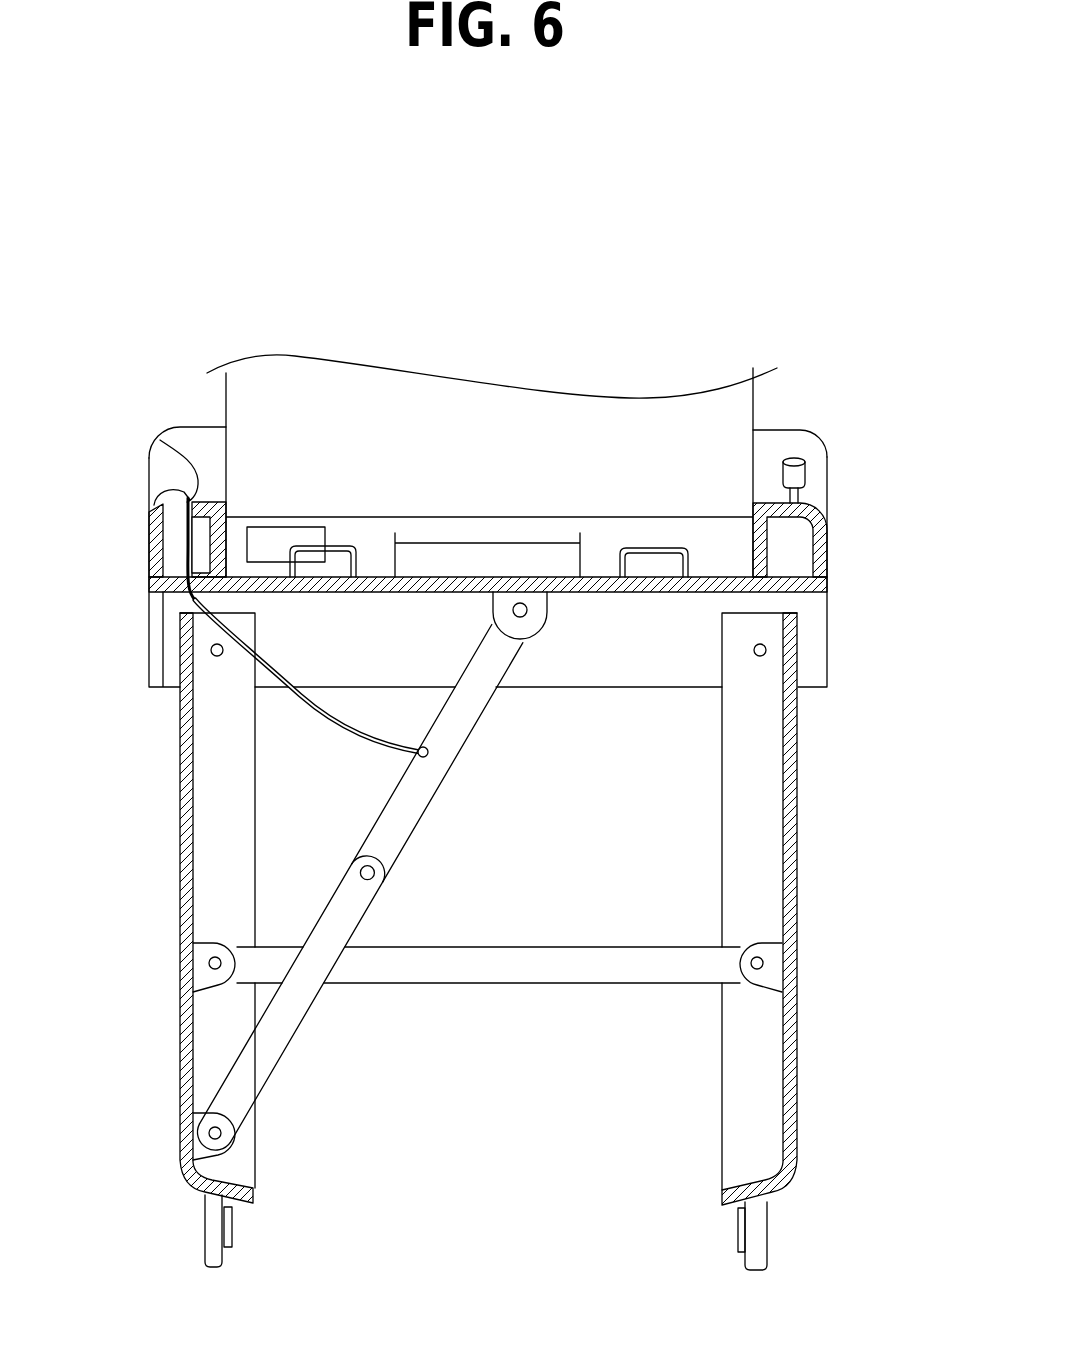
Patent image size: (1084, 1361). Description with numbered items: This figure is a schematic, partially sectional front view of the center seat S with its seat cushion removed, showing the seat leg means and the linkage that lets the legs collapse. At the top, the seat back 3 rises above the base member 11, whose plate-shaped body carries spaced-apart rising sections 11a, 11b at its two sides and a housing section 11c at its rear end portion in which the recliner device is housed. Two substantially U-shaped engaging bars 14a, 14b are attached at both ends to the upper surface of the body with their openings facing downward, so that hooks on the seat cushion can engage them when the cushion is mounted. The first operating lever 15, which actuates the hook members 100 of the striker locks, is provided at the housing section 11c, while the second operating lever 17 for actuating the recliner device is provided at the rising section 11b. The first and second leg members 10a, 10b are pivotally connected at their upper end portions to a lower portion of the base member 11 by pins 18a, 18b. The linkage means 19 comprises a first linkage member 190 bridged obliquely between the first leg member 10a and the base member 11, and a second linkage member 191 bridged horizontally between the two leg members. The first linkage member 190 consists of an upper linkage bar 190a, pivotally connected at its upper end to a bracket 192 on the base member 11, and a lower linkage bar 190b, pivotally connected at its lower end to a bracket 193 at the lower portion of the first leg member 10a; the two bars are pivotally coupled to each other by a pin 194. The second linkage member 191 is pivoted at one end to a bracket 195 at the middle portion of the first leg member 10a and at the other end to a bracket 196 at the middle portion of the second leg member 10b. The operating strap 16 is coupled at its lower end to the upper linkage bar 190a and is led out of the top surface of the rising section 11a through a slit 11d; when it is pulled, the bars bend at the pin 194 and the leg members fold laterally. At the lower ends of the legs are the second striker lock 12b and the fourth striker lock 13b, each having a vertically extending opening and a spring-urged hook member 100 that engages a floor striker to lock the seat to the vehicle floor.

The seat back 3 is at (512, 382).
The center seat S is at (797, 398).
The base member 11 is at (720, 575).
The rising section 11a is at (160, 518).
The rising section 11b is at (830, 505).
The housing section 11c is at (555, 543).
The slit 11d is at (183, 488).
The engaging bar 14a is at (343, 547).
The engaging bar 14b is at (650, 548).
The first operating lever 15 is at (265, 547).
The operating strap 16 is at (178, 545).
The second operating lever 17 is at (808, 480).
The pin 18a is at (211, 650).
The pin 18b is at (766, 650).
The first leg member 10a is at (181, 1020).
The second leg member 10b is at (800, 1068).
The linkage means 19 is at (405, 918).
The first linkage member 190 is at (396, 888).
The upper linkage bar 190a is at (453, 737).
The lower linkage bar 190b is at (298, 1000).
The second linkage member 191 is at (497, 972).
The bracket 192 is at (548, 615).
The bracket 193 is at (196, 1118).
The pin 194 is at (386, 858).
The bracket 195 is at (200, 940).
The bracket 196 is at (772, 940).
The hook member 100 is at (234, 1230).
The second striker lock 12b is at (203, 1230).
The fourth striker lock 13b is at (768, 1230).